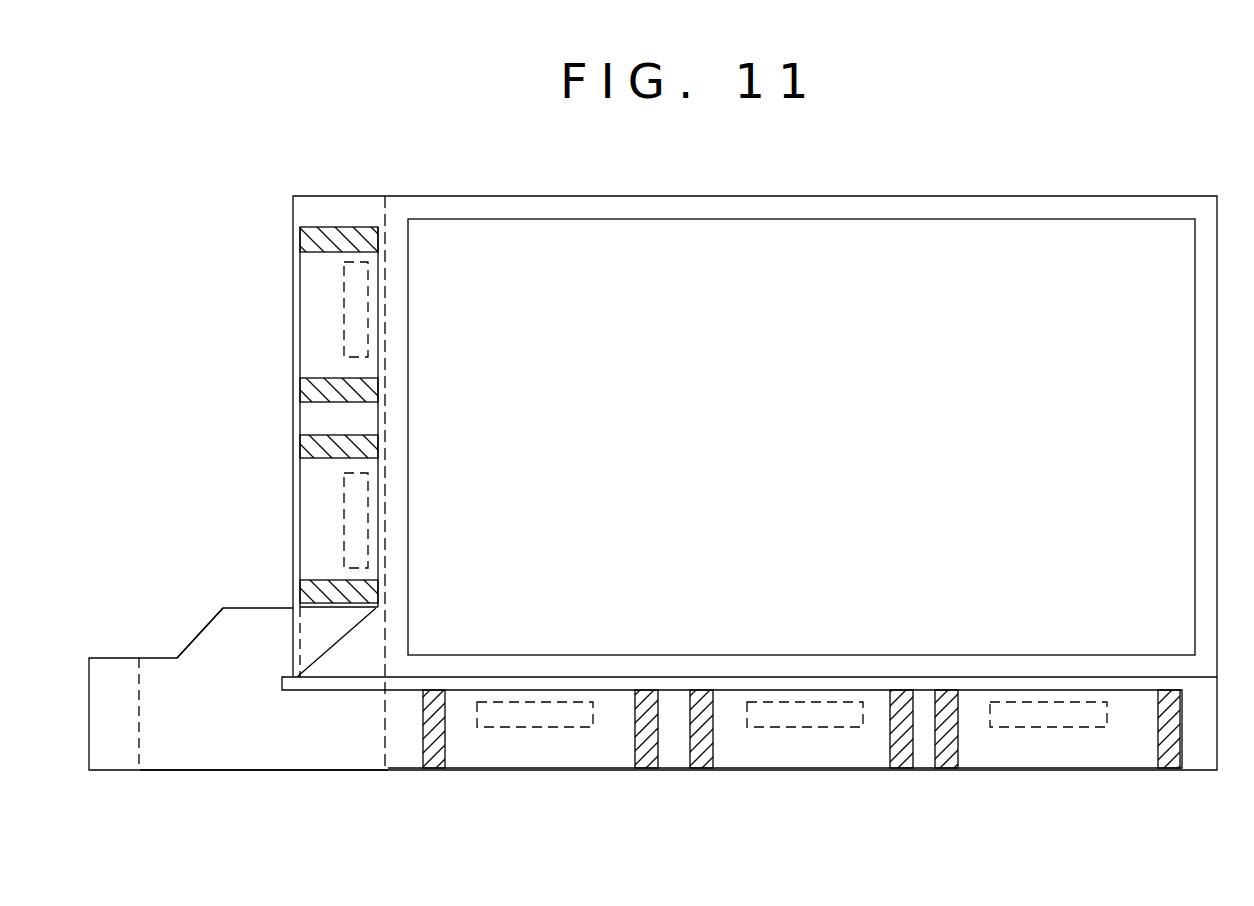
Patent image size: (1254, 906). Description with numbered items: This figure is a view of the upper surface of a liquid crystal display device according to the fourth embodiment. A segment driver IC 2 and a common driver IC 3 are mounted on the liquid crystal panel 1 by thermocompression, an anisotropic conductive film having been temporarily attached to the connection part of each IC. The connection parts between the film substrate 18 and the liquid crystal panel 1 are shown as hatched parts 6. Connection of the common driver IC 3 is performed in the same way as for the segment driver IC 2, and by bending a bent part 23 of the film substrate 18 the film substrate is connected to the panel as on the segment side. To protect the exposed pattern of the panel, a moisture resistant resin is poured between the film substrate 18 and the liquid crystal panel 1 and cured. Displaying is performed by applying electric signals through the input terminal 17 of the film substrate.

The liquid crystal panel 1 is at (880, 250).
The segment driver IC 2 is at (810, 715).
The common driver IC 3 is at (355, 527).
The hatched parts 6 is at (948, 748).
The input terminal 17 is at (121, 757).
The film substrate 18 is at (320, 747).
The bent part 23 is at (318, 636).